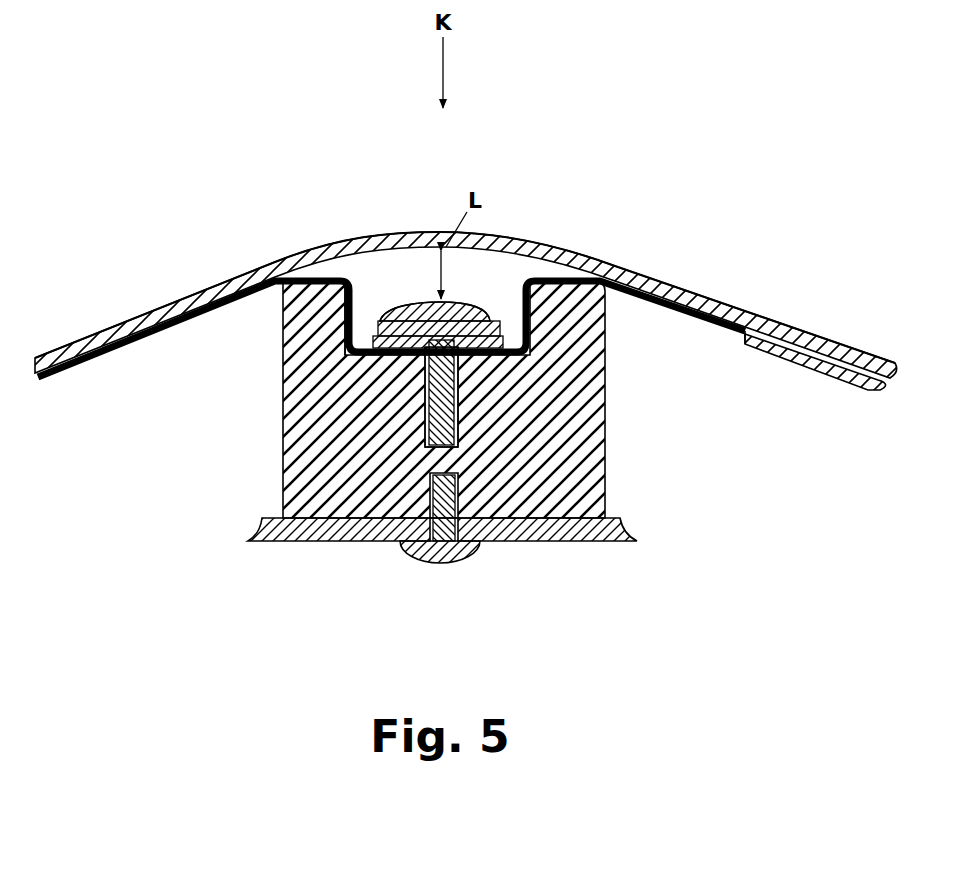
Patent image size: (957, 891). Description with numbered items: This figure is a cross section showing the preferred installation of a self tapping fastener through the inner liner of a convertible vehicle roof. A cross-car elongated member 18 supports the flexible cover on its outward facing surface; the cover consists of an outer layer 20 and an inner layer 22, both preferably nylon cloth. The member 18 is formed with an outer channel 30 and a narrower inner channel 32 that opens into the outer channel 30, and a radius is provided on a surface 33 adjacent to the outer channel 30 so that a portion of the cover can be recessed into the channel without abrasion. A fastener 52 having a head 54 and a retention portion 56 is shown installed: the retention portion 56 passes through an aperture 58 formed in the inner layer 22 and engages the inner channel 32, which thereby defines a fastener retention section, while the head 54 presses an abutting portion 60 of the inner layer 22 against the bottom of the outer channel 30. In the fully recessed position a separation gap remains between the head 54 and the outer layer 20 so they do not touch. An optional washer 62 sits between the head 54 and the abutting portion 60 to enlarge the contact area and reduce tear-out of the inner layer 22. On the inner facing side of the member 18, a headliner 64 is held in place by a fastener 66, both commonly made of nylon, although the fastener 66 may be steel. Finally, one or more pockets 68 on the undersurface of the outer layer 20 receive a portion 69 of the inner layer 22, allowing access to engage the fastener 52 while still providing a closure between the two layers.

The cross-car elongated member 18 is at (295, 477).
The outer layer 20 is at (427, 233).
The inner layer 22 is at (230, 300).
The outer channel 30 is at (345, 333).
The inner channel 32 is at (458, 413).
The surface 33 is at (548, 283).
The fastener 52 is at (410, 303).
The head 54 is at (503, 328).
The retention portion 56 is at (450, 388).
The aperture 58 is at (460, 353).
The abutting portion 60 is at (330, 393).
The washer 62 is at (487, 315).
The headliner 64 is at (622, 523).
The fastener 66 is at (478, 543).
The pocket 68 is at (822, 370).
The portion 69 is at (767, 332).